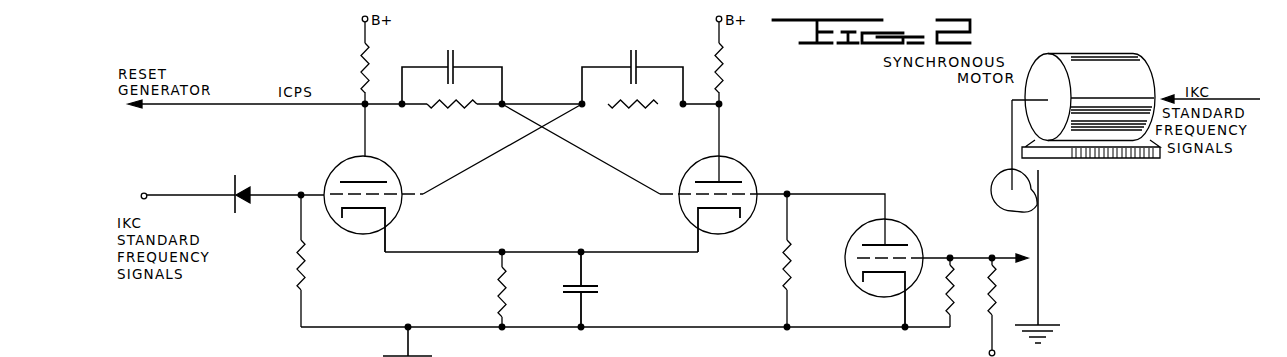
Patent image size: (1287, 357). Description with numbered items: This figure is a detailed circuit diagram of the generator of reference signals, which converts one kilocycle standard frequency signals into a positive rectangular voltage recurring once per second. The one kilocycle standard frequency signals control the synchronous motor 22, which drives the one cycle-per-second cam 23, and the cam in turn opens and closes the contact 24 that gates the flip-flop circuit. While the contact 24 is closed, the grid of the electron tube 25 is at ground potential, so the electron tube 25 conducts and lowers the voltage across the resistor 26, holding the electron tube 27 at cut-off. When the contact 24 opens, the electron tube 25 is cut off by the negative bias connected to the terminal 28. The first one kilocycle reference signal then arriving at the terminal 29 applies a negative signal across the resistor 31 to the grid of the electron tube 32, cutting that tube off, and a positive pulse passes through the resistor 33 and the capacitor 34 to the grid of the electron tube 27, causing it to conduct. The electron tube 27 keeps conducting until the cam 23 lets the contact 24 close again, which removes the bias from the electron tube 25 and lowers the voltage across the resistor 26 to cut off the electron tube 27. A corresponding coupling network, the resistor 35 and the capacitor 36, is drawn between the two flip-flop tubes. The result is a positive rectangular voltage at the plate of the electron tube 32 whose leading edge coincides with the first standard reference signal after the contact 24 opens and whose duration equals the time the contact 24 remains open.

The synchronous motor 22 is at (1146, 64).
The 1 C.P.S. cam 23 is at (993, 172).
The contact 24 is at (1040, 222).
The electron tube 25 is at (912, 231).
The resistor 26 is at (791, 253).
The electron tube 27 is at (746, 169).
The terminal 28 is at (988, 353).
The terminal 29 is at (142, 193).
The resistor 31 is at (313, 261).
The electron tube 32 is at (334, 172).
The resistor 33 is at (459, 111).
The capacitor 34 is at (453, 49).
The resistor 35 is at (641, 111).
The capacitor 36 is at (636, 49).